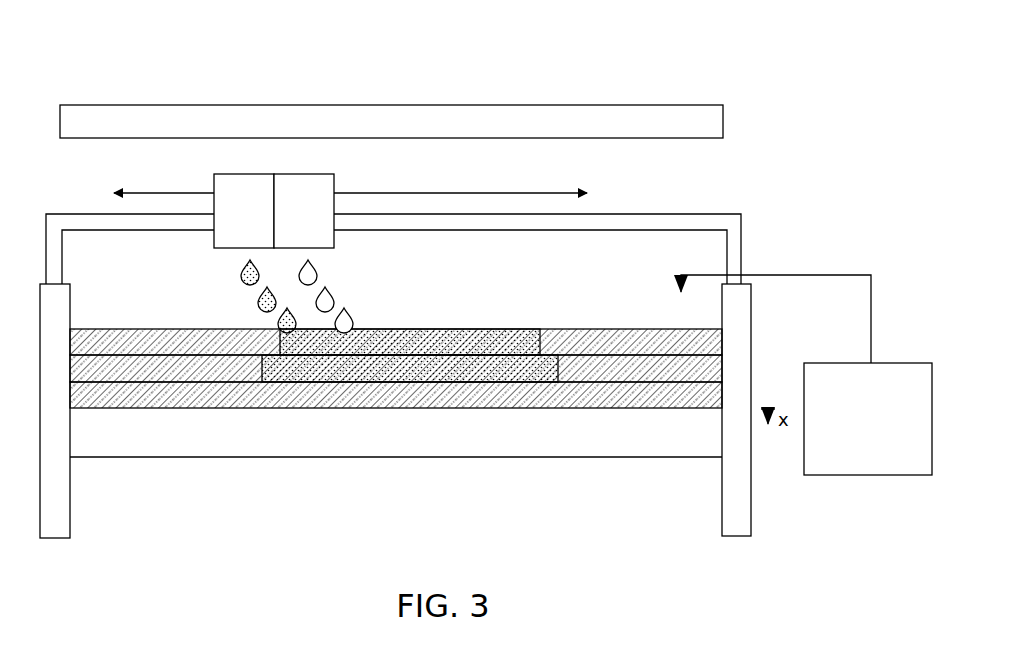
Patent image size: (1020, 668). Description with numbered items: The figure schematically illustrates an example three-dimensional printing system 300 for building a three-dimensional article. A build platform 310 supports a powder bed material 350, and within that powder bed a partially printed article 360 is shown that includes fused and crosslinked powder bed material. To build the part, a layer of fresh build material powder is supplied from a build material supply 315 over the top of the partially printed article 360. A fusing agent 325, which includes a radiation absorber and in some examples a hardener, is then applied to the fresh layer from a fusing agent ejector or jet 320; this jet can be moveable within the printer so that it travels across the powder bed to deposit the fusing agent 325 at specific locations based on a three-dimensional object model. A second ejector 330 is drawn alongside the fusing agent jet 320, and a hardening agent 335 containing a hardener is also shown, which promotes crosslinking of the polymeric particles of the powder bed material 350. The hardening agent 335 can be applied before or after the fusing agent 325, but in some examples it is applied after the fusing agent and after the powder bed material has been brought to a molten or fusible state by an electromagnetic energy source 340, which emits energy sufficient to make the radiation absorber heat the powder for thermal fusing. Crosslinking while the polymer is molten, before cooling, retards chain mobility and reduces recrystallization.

The 3D printing system 300 is at (112, 76).
The build platform 310 is at (200, 433).
The build material supply 315 is at (806, 375).
The fusing agent ejector or jet 320 is at (244, 211).
The fusing agent 325 is at (241, 274).
The second print head 330 is at (304, 211).
The hardening agent 335 is at (333, 298).
The electromagnetic energy source 340 is at (391, 121).
The powder bed material 350 is at (377, 397).
The partially printed article 360 is at (425, 340).